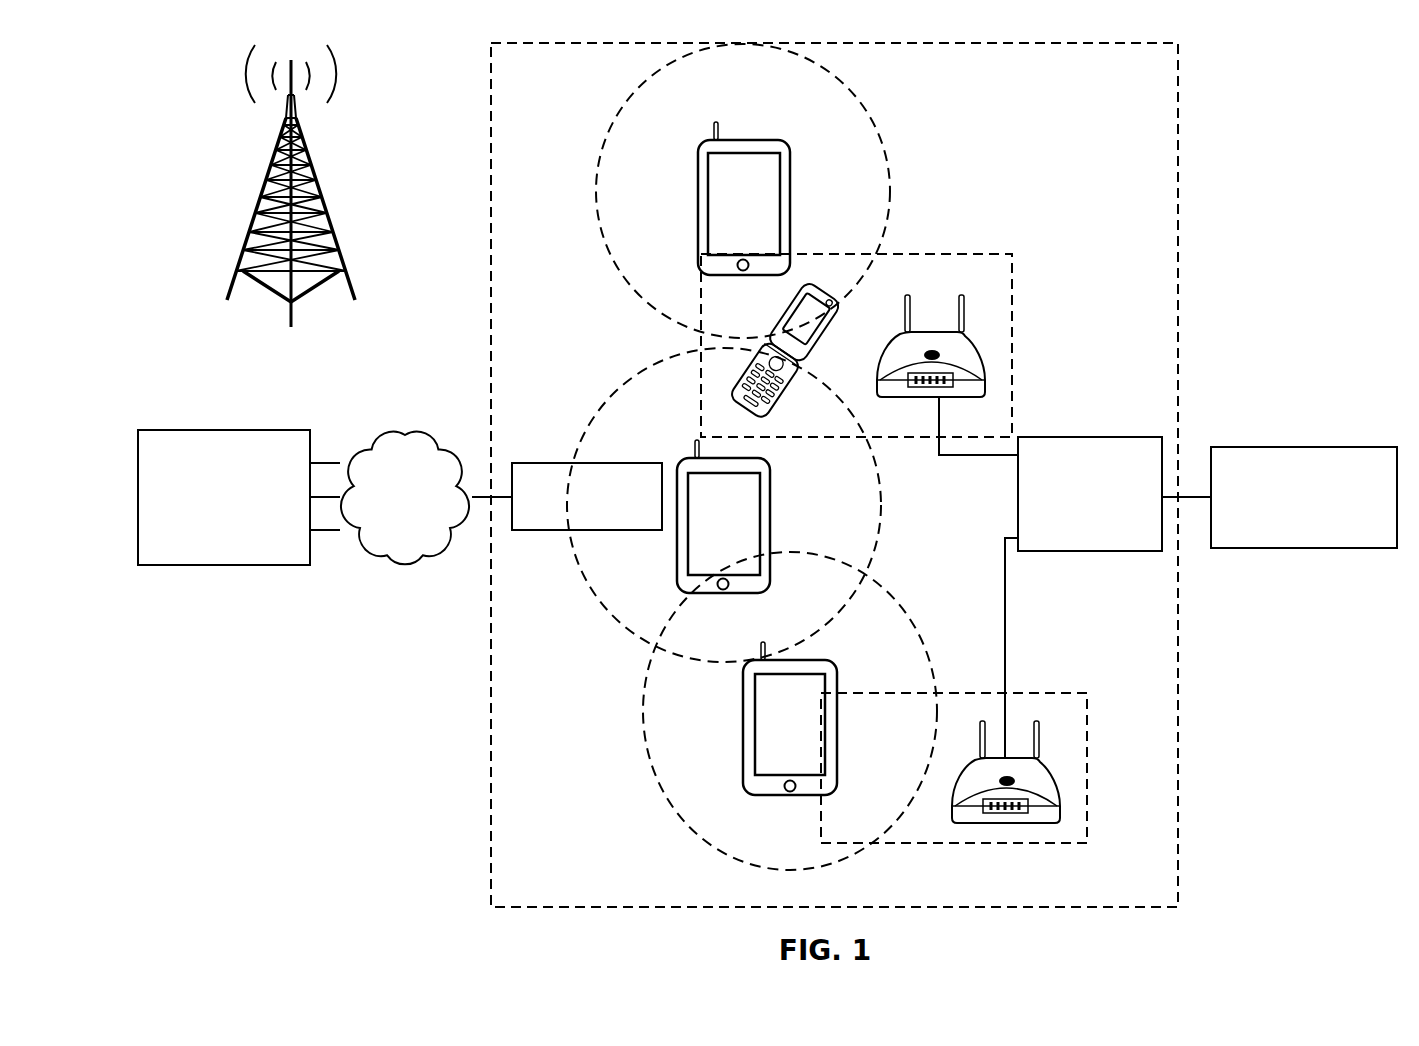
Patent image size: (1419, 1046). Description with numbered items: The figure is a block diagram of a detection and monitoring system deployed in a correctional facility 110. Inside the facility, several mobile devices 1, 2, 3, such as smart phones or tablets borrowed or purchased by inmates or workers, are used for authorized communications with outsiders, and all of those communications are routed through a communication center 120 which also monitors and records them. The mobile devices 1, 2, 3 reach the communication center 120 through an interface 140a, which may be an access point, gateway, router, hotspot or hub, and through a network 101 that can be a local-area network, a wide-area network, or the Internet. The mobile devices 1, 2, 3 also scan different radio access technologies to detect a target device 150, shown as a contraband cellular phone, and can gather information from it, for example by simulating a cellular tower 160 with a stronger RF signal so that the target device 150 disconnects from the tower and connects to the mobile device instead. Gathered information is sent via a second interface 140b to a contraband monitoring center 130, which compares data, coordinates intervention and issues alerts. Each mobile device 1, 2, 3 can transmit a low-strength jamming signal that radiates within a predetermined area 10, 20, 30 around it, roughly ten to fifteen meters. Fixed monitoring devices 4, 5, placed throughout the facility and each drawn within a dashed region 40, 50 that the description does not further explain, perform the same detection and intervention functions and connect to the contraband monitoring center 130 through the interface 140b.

The mobile device 1 is at (744, 198).
The mobile device 2 is at (723, 516).
The mobile device 3 is at (790, 718).
The fixed monitoring device 4 is at (888, 359).
The fixed monitoring device 5 is at (969, 771).
The predetermined area 10 is at (851, 97).
The predetermined area 20 is at (882, 510).
The predetermined area 30 is at (906, 619).
The first access point area 40 is at (1012, 271).
The second access point area 50 is at (1088, 707).
The network 101 is at (416, 498).
The correctional facility 110 is at (1179, 193).
The communication center 120 is at (239, 497).
The contraband monitoring center 130 is at (1279, 497).
The interface 140a is at (576, 496).
The interface 140b is at (1090, 494).
The target device 150 is at (776, 340).
The cellular tower 160 is at (326, 223).